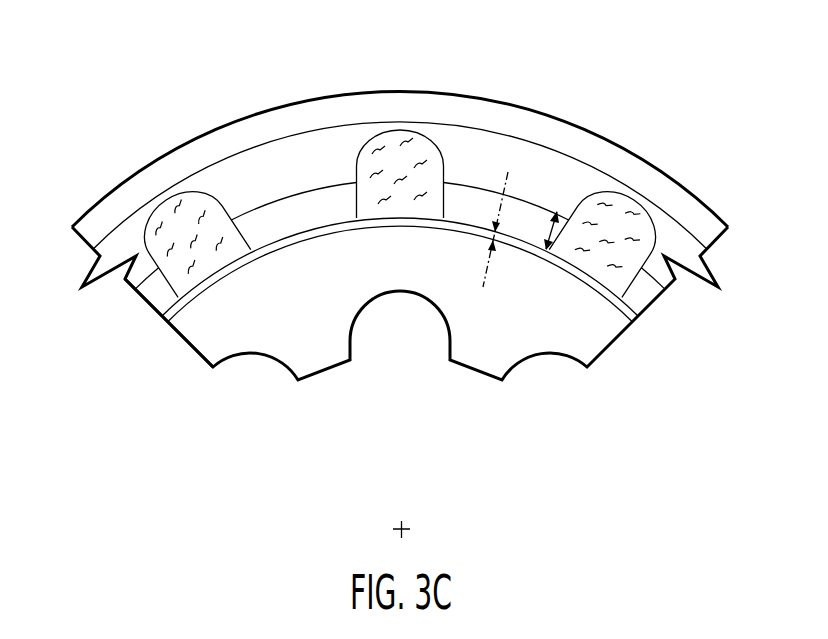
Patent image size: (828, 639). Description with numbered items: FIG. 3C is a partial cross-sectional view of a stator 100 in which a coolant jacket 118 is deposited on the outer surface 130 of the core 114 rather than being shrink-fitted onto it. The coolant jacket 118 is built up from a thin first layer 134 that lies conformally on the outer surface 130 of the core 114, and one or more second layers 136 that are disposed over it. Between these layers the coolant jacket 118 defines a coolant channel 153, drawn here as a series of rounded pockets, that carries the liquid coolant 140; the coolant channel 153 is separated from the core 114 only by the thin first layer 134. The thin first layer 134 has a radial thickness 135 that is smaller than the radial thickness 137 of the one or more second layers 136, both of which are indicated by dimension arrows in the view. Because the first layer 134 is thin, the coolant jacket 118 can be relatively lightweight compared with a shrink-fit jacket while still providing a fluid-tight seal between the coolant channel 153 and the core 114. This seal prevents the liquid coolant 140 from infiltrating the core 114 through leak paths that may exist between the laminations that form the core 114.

The electric machine 100 is at (153, 511).
The core 114 is at (402, 332).
The coolant jacket 118 is at (613, 118).
The outer surface 130 is at (340, 230).
The first layer 134 is at (172, 301).
The radial thickness 135 is at (495, 232).
The second layer 136 is at (157, 289).
The radial thickness 137 is at (552, 215).
The liquid coolant 140 is at (205, 198).
The coolant channel 153 is at (173, 203).